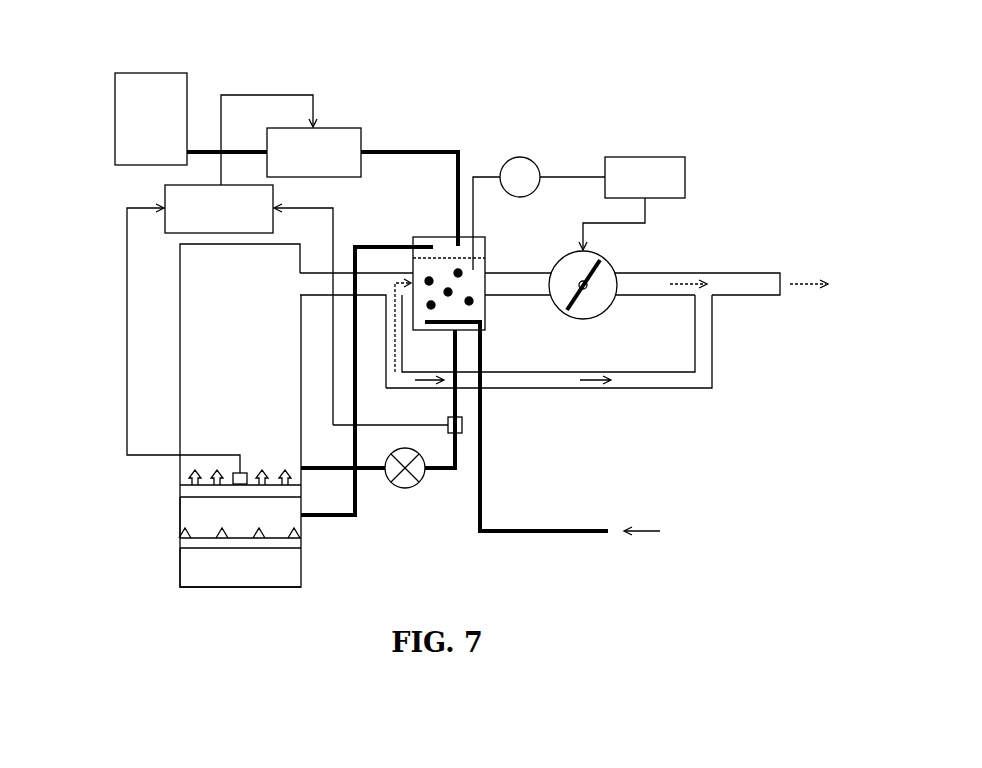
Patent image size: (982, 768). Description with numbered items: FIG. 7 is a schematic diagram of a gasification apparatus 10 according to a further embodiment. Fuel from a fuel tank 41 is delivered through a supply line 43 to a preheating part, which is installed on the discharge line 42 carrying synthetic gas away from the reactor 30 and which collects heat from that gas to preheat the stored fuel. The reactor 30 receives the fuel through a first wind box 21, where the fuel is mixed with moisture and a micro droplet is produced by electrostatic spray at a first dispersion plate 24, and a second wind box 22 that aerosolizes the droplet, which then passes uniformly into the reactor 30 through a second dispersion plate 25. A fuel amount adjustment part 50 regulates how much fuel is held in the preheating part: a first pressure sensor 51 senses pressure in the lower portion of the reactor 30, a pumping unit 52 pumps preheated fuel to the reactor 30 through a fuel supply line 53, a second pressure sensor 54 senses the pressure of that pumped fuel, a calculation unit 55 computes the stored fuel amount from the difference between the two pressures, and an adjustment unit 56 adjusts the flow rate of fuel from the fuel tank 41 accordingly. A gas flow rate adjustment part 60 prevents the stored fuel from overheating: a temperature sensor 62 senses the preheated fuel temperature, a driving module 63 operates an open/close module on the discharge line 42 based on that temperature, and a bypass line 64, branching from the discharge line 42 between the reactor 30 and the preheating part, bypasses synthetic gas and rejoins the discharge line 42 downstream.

The gasification apparatus 10 is at (432, 27).
The first wind box 21 is at (182, 572).
The second wind box 22 is at (182, 513).
The first dispersion plate 24 is at (186, 544).
The second dispersion plate 25 is at (186, 490).
The reactor 30 is at (180, 350).
The fuel tank 41 is at (115, 105).
The discharge line 42 is at (752, 296).
The supply line 43 is at (246, 150).
The fuel amount adjustment part 50 is at (378, 126).
The first pressure sensor 51 is at (238, 465).
The pumping unit 52 is at (405, 489).
The fuel supply line 53 is at (443, 472).
The second pressure sensor 54 is at (448, 424).
The calculation unit 55 is at (166, 222).
The adjustment unit 56 is at (355, 128).
The gas flow rate adjustment part 60 is at (692, 406).
The temperature sensor 62 is at (520, 157).
The driving module 63 is at (645, 157).
The bypass line 64 is at (607, 312).